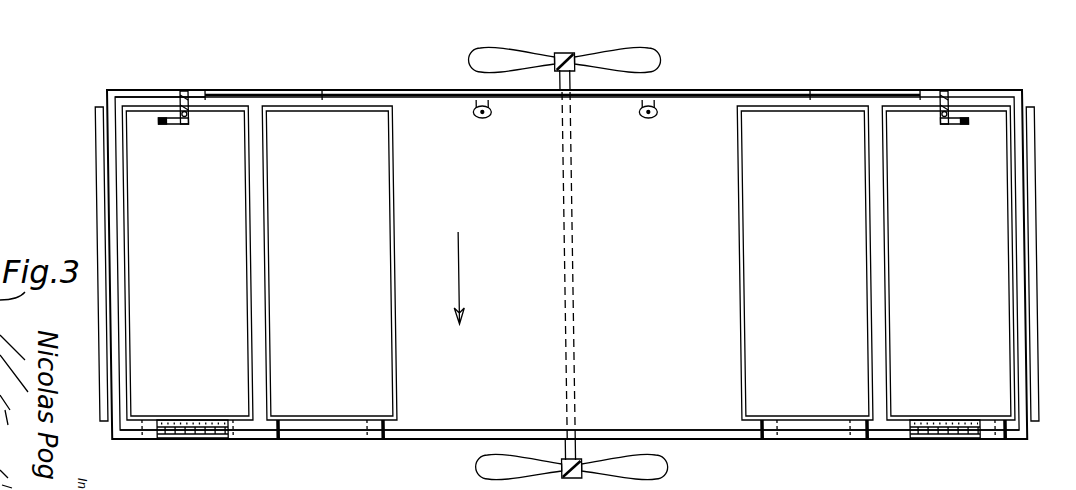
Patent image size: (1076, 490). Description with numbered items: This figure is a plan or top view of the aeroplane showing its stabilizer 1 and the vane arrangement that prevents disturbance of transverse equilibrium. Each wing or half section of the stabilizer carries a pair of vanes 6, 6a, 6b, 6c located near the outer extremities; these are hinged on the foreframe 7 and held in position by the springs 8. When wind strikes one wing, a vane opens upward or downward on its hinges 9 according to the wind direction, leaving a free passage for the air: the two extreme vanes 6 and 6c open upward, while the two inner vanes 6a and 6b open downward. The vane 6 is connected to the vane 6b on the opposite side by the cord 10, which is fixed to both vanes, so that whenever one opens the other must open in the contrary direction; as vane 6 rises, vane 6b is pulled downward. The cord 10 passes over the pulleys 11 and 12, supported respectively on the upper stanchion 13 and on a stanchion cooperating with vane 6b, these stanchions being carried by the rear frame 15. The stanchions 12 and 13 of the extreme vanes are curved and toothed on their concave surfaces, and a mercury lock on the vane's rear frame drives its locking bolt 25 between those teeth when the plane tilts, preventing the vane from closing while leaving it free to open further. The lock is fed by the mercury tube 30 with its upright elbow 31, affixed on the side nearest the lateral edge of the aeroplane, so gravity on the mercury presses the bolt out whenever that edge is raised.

The housing 1 is at (567, 264).
The vane 6 is at (187, 263).
The vane 6a is at (329, 263).
The vane 6b is at (805, 263).
The vane 6c is at (948, 263).
The foreframe 7 is at (332, 437).
The springs 8 is at (272, 440).
The hinges 9 is at (170, 440).
The cord 10 is at (196, 106).
The pulley 11 is at (190, 118).
The pulley 12 is at (942, 114).
The upper stanchion 13 is at (183, 125).
The rear frame 15 is at (140, 97).
The locking bolt 25 is at (186, 92).
The mercury tube 30 is at (188, 123).
The elbow 31 is at (162, 126).